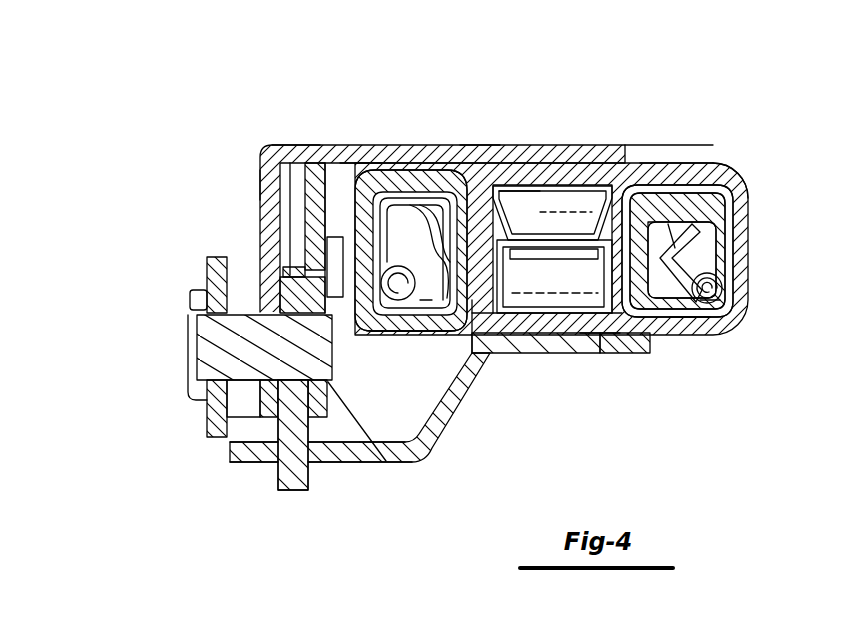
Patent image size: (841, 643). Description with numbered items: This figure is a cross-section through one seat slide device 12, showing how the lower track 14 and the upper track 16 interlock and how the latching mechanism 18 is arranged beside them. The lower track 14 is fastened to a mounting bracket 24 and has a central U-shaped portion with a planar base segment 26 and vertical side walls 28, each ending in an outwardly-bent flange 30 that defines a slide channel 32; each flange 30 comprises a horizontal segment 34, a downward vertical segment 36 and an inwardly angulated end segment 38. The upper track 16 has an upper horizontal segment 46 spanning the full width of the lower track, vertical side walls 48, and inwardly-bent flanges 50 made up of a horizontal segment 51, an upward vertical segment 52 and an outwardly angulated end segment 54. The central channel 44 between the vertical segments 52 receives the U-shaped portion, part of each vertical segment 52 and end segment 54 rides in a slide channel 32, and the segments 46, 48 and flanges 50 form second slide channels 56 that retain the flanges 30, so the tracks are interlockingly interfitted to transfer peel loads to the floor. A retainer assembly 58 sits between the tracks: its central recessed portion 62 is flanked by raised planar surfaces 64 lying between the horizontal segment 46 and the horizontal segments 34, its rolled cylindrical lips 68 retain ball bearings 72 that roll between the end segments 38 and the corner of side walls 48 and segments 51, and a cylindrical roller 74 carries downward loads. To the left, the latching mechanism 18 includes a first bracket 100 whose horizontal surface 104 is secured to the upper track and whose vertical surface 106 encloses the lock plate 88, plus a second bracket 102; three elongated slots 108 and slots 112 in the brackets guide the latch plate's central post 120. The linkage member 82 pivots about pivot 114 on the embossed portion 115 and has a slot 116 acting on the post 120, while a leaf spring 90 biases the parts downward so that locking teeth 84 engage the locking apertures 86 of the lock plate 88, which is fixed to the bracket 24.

The seat slide device 12 is at (660, 82).
The lower track 14 is at (560, 347).
The upper track 16 is at (712, 153).
The latching mechanism 18 is at (170, 193).
The mounting bracket 24 is at (458, 410).
The planar base segment 26 is at (520, 343).
The side wall 28 is at (592, 335).
The outwardly-bent flange 30 is at (419, 203).
The slide channel 32 is at (722, 229).
The horizontal segment 34 is at (448, 210).
The vertical segment 36 is at (392, 205).
The angulated end segment 38 is at (432, 302).
The central channel 44 is at (468, 352).
The upper horizontal segment 46 is at (628, 182).
The vertical side wall 48 is at (740, 237).
The inwardly-bent flange 50 is at (393, 334).
The horizontal segment 51 is at (690, 325).
The vertical segment 52 is at (623, 335).
The angulated end segment 54 is at (675, 248).
The slide channel 56 is at (680, 300).
The retainer assembly 58 is at (518, 184).
The central recessed portion 62 is at (575, 215).
The raised planar horizontal surface 64 is at (673, 179).
The cylindrical lip 68 is at (720, 298).
The ball bearing 72 is at (710, 288).
The cylindrical roller 74 is at (540, 194).
The linkage member 82 is at (213, 260).
The locking tooth 84 is at (290, 490).
The locking aperture 86 is at (277, 453).
The lock plate 88 is at (340, 452).
The leaf spring 90 is at (292, 145).
The first bracket 100 is at (320, 143).
The second bracket 102 is at (352, 147).
The horizontal surface 104 is at (481, 143).
The vertical surface 106 is at (267, 183).
The elongated slot 108 is at (250, 265).
The elongated slot 112 is at (382, 447).
The pivot 114 is at (193, 317).
The embossed portion 115 is at (250, 220).
The slot 116 is at (190, 300).
The central post 120 is at (210, 343).